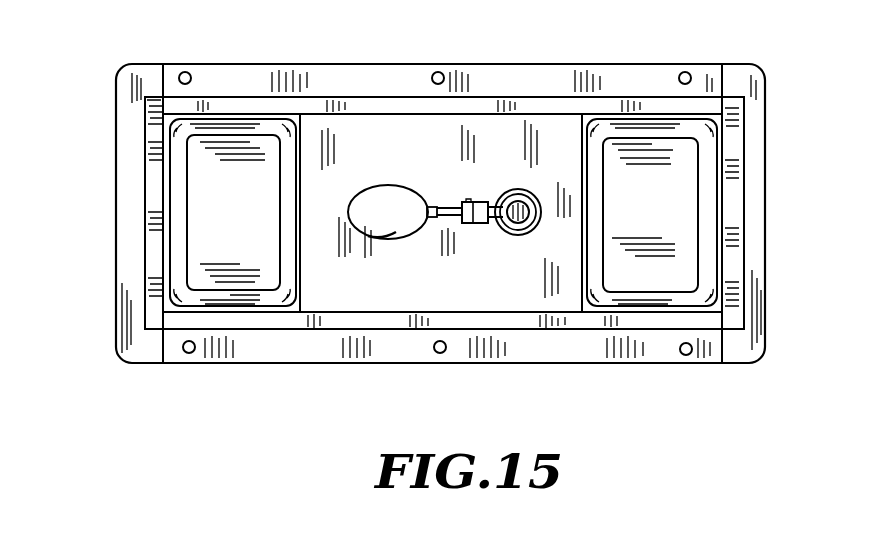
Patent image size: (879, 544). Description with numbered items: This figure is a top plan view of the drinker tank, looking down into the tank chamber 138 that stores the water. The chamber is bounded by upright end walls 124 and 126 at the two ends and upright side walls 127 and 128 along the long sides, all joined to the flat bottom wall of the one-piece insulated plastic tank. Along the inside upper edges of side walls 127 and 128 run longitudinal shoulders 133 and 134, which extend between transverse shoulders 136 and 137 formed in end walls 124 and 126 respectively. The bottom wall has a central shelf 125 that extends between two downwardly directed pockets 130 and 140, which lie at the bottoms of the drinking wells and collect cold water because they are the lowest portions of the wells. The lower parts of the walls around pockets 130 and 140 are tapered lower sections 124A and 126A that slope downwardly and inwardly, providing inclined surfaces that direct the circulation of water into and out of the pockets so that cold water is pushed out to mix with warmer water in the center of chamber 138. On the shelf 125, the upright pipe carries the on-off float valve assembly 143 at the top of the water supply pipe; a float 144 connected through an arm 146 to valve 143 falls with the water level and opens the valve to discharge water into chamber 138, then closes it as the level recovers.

The end wall 124 is at (133, 193).
The tapered lower section 124A is at (175, 265).
The central shelf 125 is at (407, 128).
The end wall 126 is at (753, 132).
The tapered lower section 126A is at (708, 203).
The side wall 127 is at (553, 82).
The side wall 128 is at (280, 348).
The pocket 130 is at (242, 150).
The longitudinal shoulder 133 is at (480, 107).
The longitudinal shoulder 134 is at (393, 320).
The transverse shoulder 136 is at (147, 120).
The transverse shoulder 137 is at (730, 268).
The tank chamber 138 is at (508, 288).
The pocket 140 is at (652, 157).
The float valve assembly 143 is at (473, 203).
The float 144 is at (367, 203).
The arm 146 is at (448, 207).